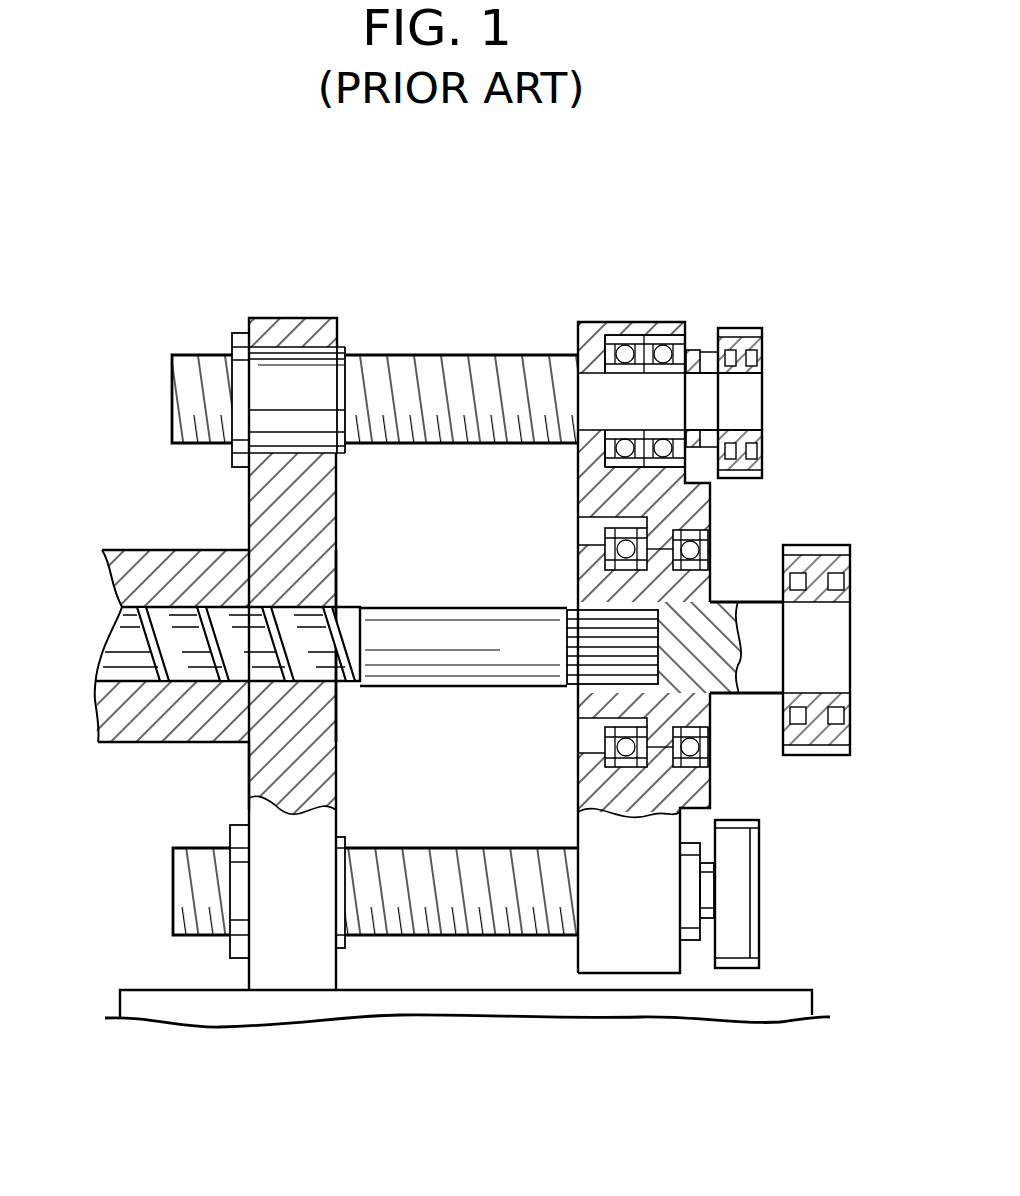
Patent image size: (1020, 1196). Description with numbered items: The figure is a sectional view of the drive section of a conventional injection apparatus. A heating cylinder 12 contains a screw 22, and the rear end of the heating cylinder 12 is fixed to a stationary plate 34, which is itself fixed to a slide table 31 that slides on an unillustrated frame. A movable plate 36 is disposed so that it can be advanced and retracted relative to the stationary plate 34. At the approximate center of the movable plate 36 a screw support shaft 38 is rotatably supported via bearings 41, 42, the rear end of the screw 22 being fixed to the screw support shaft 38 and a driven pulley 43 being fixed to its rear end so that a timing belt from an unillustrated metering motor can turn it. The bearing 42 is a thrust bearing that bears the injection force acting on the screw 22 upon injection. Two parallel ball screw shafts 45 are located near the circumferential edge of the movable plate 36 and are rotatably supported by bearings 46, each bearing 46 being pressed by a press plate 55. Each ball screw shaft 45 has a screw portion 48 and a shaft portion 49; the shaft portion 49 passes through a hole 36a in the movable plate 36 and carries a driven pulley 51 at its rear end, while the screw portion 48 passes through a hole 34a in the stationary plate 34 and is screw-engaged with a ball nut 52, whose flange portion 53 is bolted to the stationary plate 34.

The heating cylinder 12 is at (157, 573).
The screw 22 is at (133, 663).
The slide table 31 is at (417, 1007).
The stationary plate 34 is at (305, 318).
The hole 34a is at (307, 350).
The movable plate 36 is at (682, 592).
The hole 36a is at (596, 372).
The screw support shaft 38 is at (593, 555).
The bearing 41 is at (712, 760).
The bearing 42 is at (603, 760).
The driven pulley 43 is at (852, 560).
The ball screw shaft 45 is at (462, 352).
The bearing 46 is at (693, 348).
The screw portion 48 is at (388, 362).
The shaft portion 49 is at (748, 400).
The driven pulley 51 is at (763, 331).
The ball nut 52 is at (274, 365).
The flange portion 53 is at (232, 343).
The press plate 55 is at (700, 357).